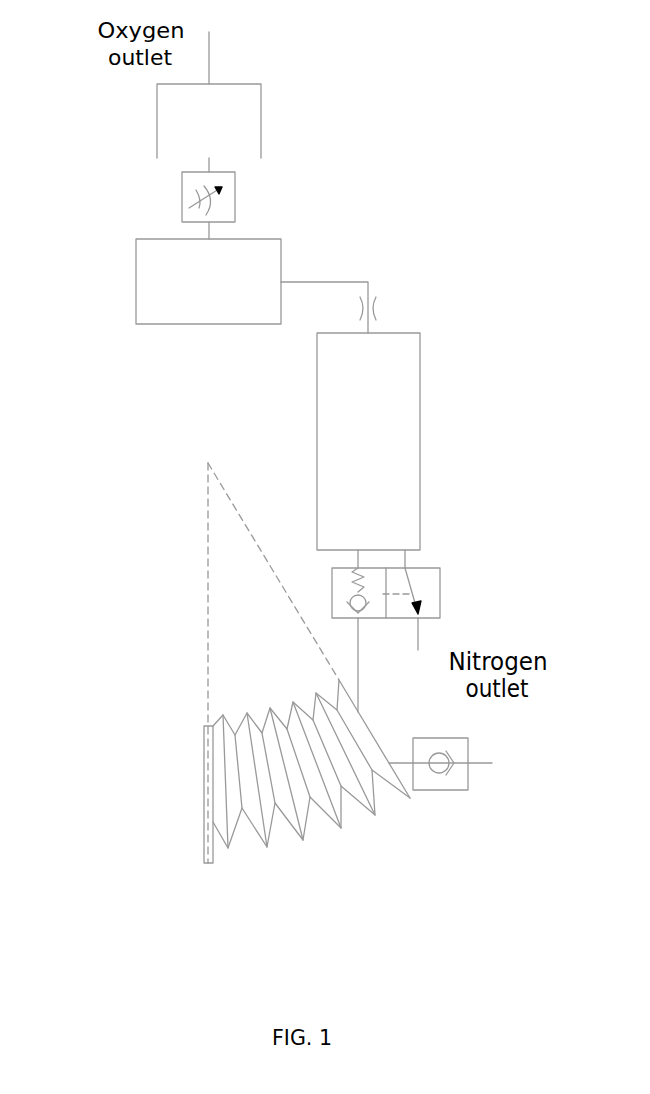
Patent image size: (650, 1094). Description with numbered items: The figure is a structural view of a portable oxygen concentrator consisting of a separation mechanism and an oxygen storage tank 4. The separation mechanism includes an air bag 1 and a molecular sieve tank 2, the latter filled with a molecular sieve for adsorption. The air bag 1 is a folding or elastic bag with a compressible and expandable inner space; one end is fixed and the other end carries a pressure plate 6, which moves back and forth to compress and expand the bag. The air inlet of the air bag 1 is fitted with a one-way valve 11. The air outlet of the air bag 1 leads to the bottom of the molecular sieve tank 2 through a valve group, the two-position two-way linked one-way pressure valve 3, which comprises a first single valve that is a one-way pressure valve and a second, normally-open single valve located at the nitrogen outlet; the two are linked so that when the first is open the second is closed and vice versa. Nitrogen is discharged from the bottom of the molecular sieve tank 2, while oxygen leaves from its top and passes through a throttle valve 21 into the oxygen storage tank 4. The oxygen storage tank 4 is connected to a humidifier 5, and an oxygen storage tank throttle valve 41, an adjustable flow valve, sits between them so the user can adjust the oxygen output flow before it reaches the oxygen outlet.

The air bag 1 is at (335, 800).
The one-way valve 11 is at (460, 778).
The molecular sieve tank 2 is at (416, 445).
The throttle valve 21 is at (377, 308).
The two-position two-way linked one-way pressure valve 3 is at (440, 588).
The oxygen storage tank 4 is at (136, 282).
The oxygen storage tank throttle valve 41 is at (183, 201).
The humidifier 5 is at (157, 120).
The pressure plate 6 is at (203, 866).